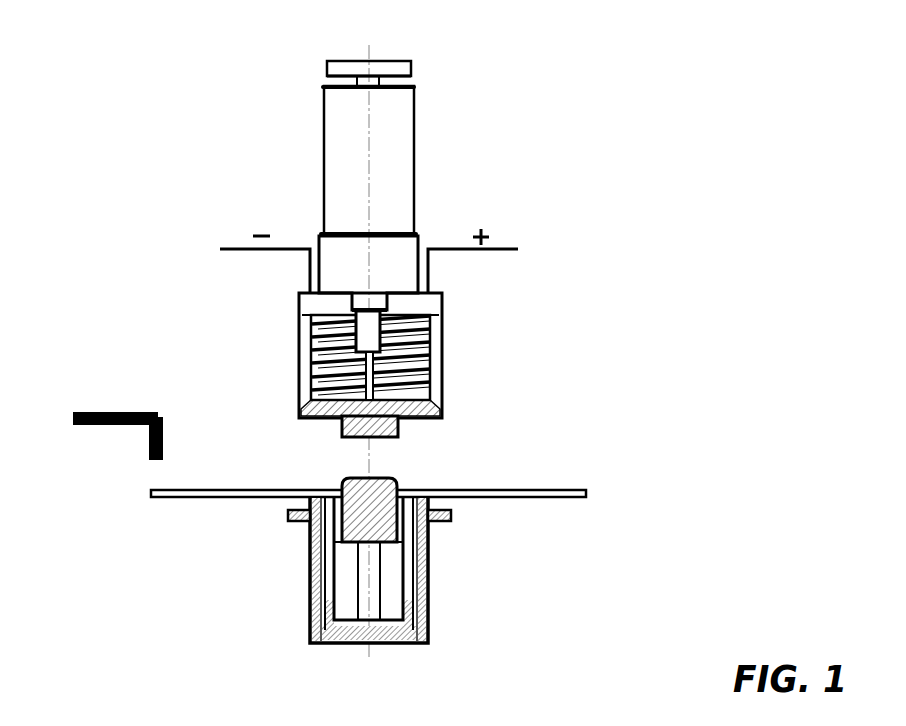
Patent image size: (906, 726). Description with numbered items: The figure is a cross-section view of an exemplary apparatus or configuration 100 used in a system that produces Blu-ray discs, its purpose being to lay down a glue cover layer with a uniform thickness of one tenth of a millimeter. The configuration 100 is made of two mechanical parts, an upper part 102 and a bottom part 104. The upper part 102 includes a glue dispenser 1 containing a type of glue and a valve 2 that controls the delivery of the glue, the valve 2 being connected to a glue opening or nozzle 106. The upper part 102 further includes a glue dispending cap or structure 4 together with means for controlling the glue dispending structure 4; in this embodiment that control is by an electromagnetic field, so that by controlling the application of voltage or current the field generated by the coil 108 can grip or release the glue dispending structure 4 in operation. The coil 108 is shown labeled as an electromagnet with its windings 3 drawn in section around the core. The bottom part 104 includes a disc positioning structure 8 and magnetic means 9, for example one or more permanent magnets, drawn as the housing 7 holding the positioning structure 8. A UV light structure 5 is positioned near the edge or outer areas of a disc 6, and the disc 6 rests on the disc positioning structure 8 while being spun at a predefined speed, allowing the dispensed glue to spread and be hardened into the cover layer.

The glue dispenser 1 is at (322, 139).
The valve 2 is at (398, 253).
The electromagnet coil 3 is at (322, 328).
The glue dispending structure 4 is at (400, 425).
The UV light structure 5 is at (109, 407).
The disc 6 is at (165, 487).
The lower housing 7 is at (305, 549).
The disc positioning structure 8 is at (362, 525).
The magnetic means 9 is at (446, 519).
The configuration 100 is at (391, 339).
The upper part 102 is at (694, 117).
The bottom part 104 is at (692, 478).
The glue opening or nozzle 106 is at (374, 388).
The coil 108 is at (424, 313).